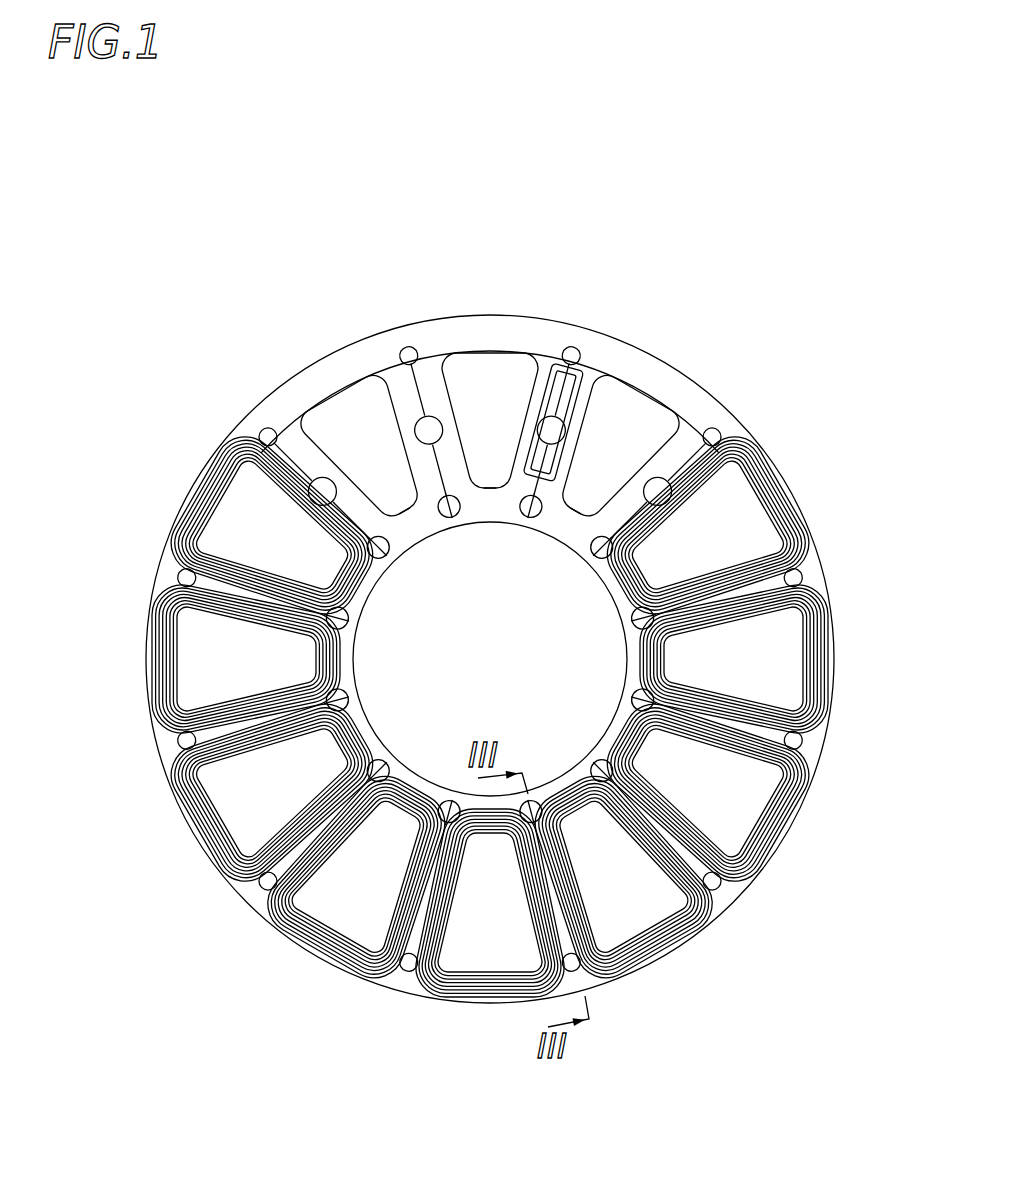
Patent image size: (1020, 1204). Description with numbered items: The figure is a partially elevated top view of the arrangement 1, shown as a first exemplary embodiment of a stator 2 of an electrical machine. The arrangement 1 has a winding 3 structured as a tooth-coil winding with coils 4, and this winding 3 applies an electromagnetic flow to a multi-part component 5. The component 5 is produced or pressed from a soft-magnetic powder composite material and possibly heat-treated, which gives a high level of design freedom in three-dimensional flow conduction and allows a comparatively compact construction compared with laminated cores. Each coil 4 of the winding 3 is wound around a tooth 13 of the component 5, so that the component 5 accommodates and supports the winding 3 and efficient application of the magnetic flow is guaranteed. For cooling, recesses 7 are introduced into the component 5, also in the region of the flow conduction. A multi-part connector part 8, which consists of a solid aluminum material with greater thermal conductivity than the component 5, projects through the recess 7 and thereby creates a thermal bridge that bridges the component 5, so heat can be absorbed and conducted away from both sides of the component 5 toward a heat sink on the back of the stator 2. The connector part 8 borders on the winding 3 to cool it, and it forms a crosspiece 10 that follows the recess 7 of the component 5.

The arrangement 1 is at (607, 152).
The stator 2 is at (706, 935).
The winding 3 is at (632, 664).
The coil 4 is at (195, 531).
The multi-part component 5 is at (236, 513).
The recess 7 is at (416, 432).
The multi-part connector part 8 is at (692, 424).
The crosspiece 10 is at (572, 395).
The tooth 13 is at (487, 388).